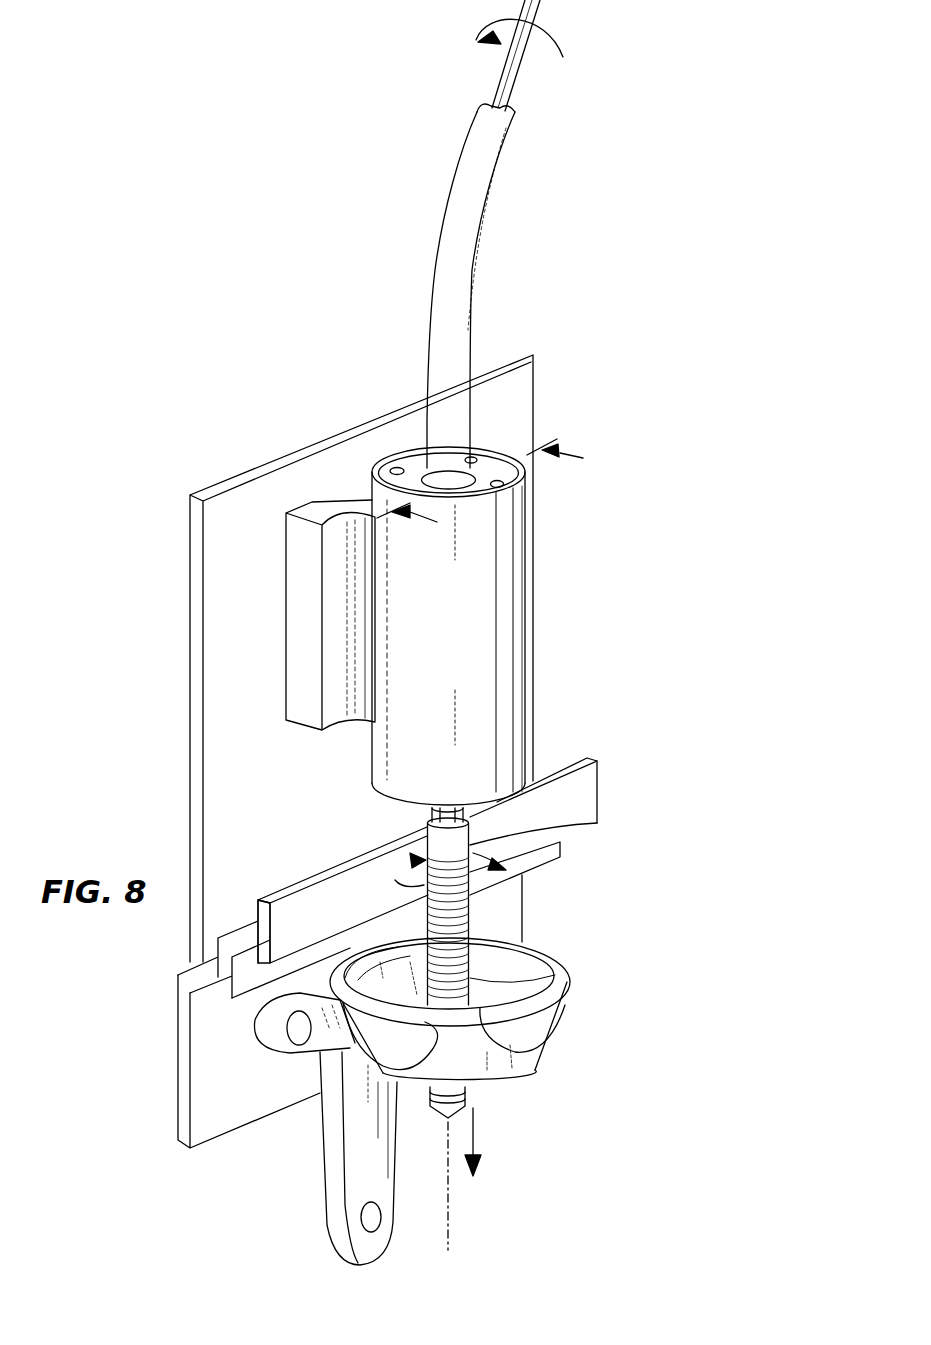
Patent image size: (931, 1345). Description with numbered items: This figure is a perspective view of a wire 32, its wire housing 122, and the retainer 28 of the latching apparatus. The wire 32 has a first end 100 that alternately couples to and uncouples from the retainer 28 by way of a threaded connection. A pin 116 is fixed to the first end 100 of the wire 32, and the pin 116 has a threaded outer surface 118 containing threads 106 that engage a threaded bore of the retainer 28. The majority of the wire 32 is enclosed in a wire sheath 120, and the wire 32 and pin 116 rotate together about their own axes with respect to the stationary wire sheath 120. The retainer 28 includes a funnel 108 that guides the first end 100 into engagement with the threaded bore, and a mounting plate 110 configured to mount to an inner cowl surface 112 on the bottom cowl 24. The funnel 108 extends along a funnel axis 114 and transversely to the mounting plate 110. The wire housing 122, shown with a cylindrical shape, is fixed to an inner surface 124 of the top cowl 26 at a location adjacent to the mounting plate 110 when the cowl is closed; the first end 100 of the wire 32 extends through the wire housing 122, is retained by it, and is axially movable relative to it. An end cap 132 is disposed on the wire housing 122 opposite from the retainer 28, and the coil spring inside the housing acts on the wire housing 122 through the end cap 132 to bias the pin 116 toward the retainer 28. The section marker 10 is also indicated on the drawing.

The section line 10 is at (480, 495).
The bottom cowl 24 is at (204, 1037).
The top cowl 26 is at (318, 658).
The retainer 28 is at (524, 875).
The wire 32 is at (515, 88).
The first end 100 is at (467, 875).
The threads 106 is at (560, 960).
The funnel 108 is at (578, 985).
The mounting plate 110 is at (330, 1127).
The inner cowl surface 112 is at (208, 1105).
The funnel axis 114 is at (448, 1228).
The pin 116 is at (552, 815).
The threaded outer surface 118 is at (416, 912).
The wire sheath 120 is at (493, 205).
The wire housing 122 is at (504, 581).
The inner surface 124 is at (222, 518).
The end cap 132 is at (490, 467).